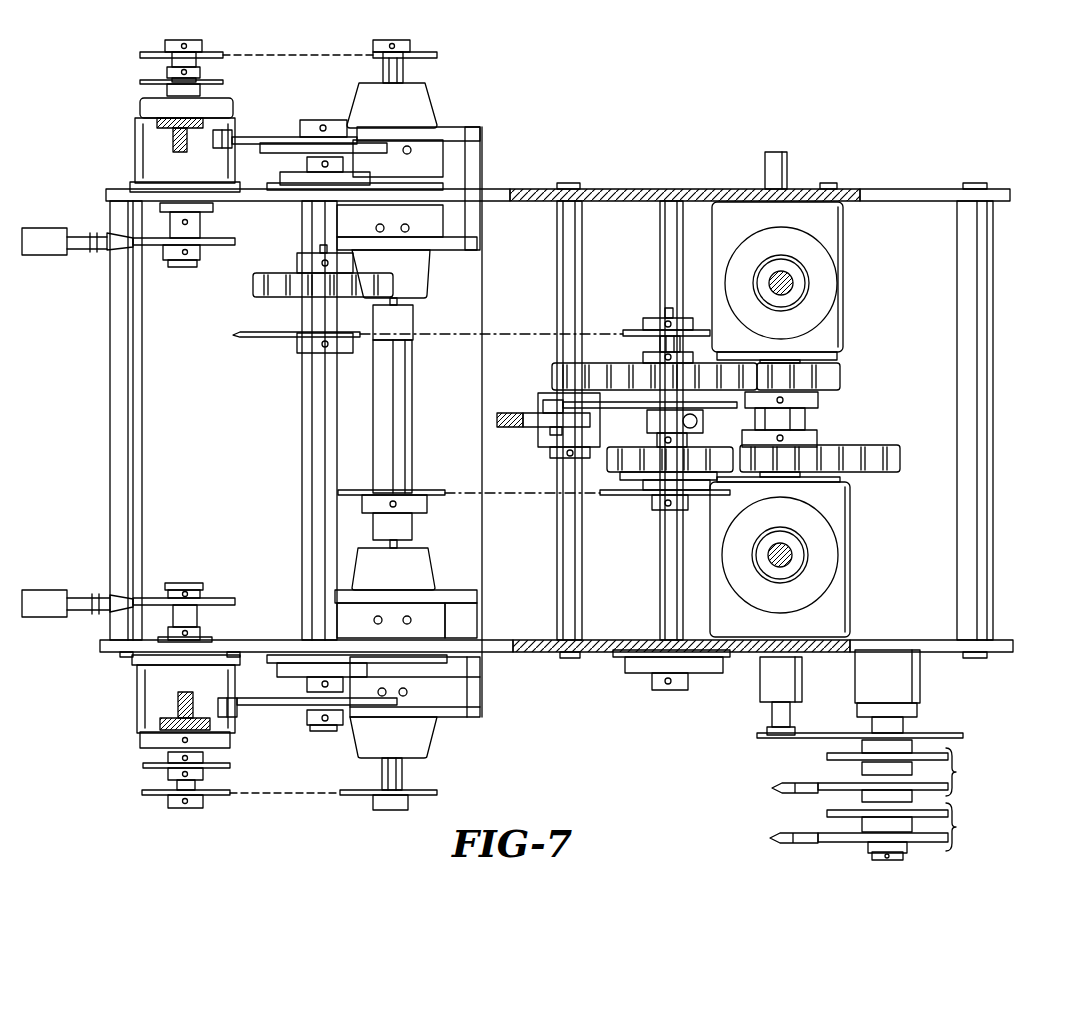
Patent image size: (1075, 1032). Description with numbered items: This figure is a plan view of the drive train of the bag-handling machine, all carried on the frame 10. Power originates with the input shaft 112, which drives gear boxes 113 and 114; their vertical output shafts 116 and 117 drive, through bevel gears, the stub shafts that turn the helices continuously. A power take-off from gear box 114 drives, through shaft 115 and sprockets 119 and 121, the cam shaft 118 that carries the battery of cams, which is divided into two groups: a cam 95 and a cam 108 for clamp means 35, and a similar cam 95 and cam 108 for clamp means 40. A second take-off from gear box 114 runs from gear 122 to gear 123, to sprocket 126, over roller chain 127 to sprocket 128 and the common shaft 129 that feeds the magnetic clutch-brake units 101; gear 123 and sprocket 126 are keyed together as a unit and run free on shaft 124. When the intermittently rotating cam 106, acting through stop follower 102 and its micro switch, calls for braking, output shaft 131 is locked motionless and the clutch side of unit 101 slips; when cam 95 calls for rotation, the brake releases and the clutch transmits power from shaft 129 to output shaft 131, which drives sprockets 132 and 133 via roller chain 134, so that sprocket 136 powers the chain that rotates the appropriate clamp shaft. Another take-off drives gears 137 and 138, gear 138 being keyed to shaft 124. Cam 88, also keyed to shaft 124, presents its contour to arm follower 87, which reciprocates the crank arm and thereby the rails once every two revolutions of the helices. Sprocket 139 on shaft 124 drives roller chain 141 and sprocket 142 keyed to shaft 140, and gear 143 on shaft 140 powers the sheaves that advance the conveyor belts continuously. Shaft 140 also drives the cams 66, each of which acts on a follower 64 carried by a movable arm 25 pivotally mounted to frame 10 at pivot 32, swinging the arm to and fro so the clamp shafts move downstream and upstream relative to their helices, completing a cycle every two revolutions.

The frame 10 is at (520, 190).
The movable arm 25 is at (157, 124).
The pivot 32 is at (167, 62).
The clamp means 35 is at (952, 828).
The clamp means 40 is at (952, 771).
The follower 64 is at (218, 152).
The cam 66 is at (277, 137).
The arm follower 87 is at (545, 405).
The cam 88 is at (577, 403).
The cam 95 is at (837, 785).
The magnetic clutch-brake unit 101 is at (447, 260).
The stop follower 102 is at (118, 250).
The intermittently rotating cam 106 is at (152, 248).
The cam 108 is at (833, 753).
The input shaft 112 is at (790, 160).
The gear box 113 is at (830, 332).
The gear box 114 is at (832, 615).
The shaft 115 is at (788, 685).
The vertical output shaft 116 is at (790, 285).
The vertical output shaft 117 is at (788, 557).
The spindle end cap 118 is at (870, 850).
The sprocket 119 is at (757, 735).
The sprocket 121 is at (928, 733).
The gear 122 is at (843, 457).
The gear 123 is at (638, 460).
The shaft 124 is at (662, 607).
The sprocket 126 is at (652, 495).
The roller chain 127 is at (537, 473).
The sprocket 128 is at (430, 490).
The common shaft 129 is at (402, 420).
The output shaft 131 is at (398, 772).
The sprocket 132 is at (365, 798).
The sprocket 133 is at (157, 795).
The roller chain 134 is at (288, 798).
The sprocket 136 is at (150, 767).
The gear 137 is at (835, 378).
The gear 138 is at (640, 375).
The sprocket 139 is at (635, 330).
The shaft 140 is at (315, 410).
The roller chain 141 is at (528, 313).
The sprocket 142 is at (244, 330).
The gear 143 is at (267, 258).